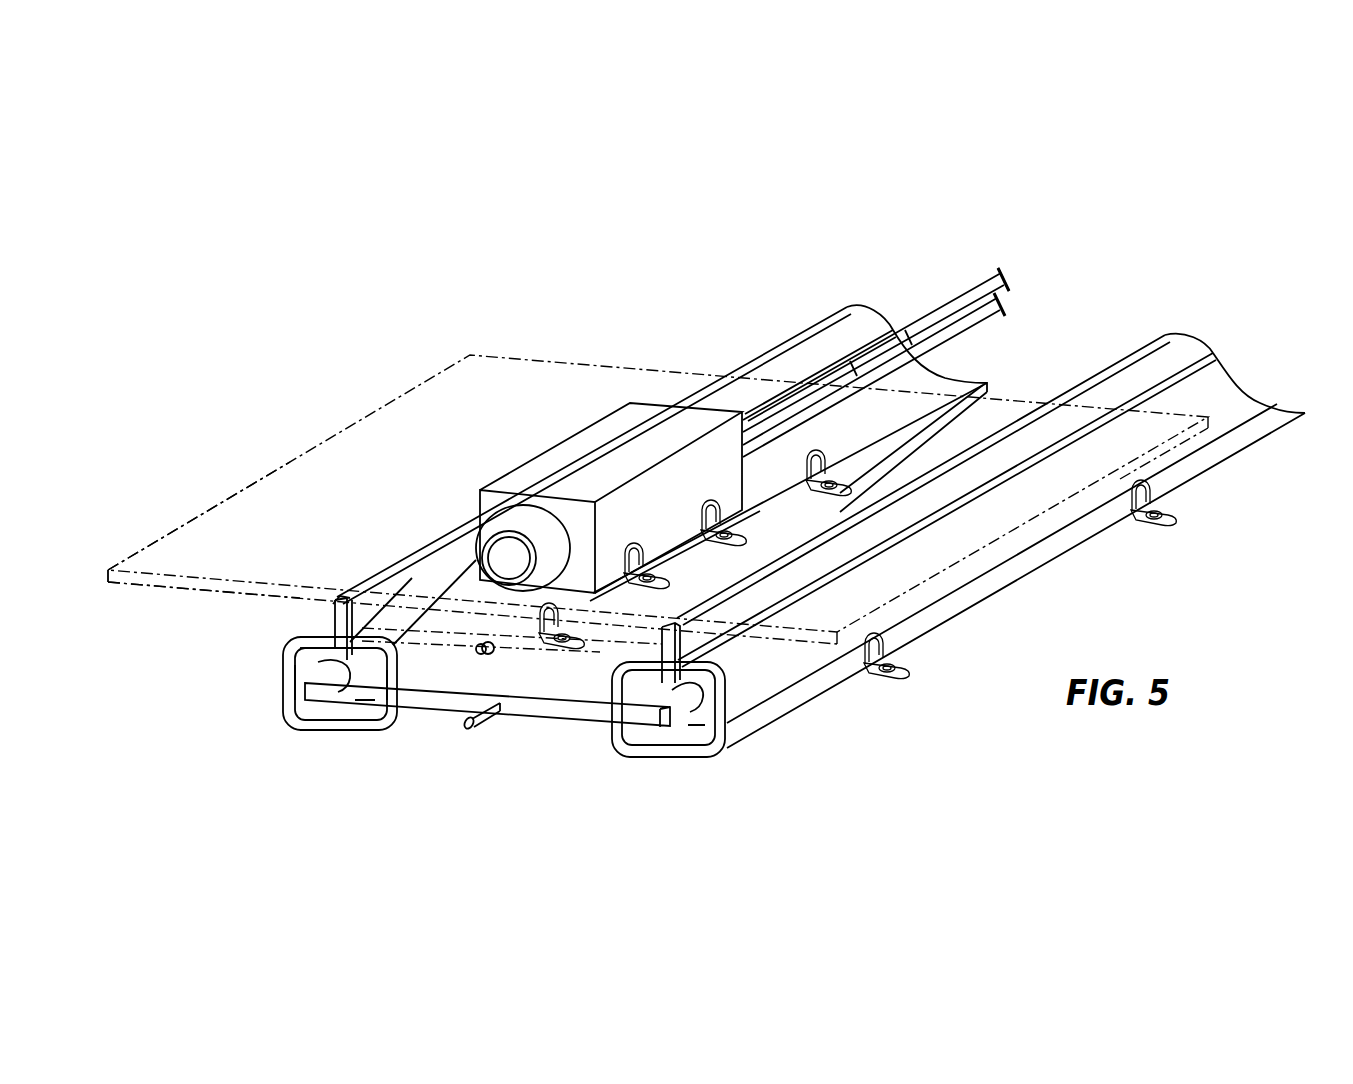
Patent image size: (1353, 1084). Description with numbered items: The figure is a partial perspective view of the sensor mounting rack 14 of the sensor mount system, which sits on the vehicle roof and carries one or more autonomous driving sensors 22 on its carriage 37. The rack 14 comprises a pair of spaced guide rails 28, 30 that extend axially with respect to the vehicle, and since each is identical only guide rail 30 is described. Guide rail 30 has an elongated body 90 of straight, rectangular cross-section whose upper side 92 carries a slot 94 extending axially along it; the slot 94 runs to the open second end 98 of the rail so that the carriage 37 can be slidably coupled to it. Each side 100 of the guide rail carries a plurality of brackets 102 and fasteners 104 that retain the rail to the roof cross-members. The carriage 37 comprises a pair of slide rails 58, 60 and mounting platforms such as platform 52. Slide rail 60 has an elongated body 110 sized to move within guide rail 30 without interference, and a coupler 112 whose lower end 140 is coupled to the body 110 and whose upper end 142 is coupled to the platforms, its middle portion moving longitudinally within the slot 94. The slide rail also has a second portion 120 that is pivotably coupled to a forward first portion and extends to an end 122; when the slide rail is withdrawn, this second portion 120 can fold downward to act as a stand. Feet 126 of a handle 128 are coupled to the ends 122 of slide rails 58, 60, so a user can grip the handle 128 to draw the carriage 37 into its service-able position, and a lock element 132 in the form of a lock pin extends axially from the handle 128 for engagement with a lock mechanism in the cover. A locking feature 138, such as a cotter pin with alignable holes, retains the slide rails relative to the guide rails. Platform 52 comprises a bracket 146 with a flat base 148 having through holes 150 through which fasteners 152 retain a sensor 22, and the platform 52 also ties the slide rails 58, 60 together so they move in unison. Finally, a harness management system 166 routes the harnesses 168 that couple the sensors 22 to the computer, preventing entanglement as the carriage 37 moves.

The sensor mounting rack 14 is at (833, 710).
The sensor 22 is at (583, 452).
The guide rail 28 is at (667, 762).
The guide rail 30 is at (344, 740).
The carriage 37 is at (145, 592).
The sensor mounting platform 52 is at (163, 527).
The slide rail 58 is at (650, 732).
The slide rail 60 is at (358, 722).
The elongated body 90 is at (900, 410).
The side 92 is at (326, 634).
The slot 94 is at (383, 628).
The second end 98 is at (310, 728).
The side 100 is at (290, 694).
The bracket 102 is at (560, 645).
The fastener 104 is at (578, 632).
The elongated body 110 is at (322, 703).
The coupler 112 is at (330, 604).
The second portion 120 is at (388, 666).
The end 122 is at (365, 705).
The foot 126 is at (333, 672).
The handle 128 is at (540, 716).
The lock element 132 is at (472, 745).
The locking feature 138 is at (491, 664).
The lower end 140 is at (312, 665).
The upper end 142 is at (344, 612).
The bracket 146 is at (145, 562).
The flat base 148 is at (193, 528).
The through hole 150 is at (640, 580).
The fastener 152 is at (645, 548).
The harness management system 166 is at (974, 282).
The harness 168 is at (968, 314).